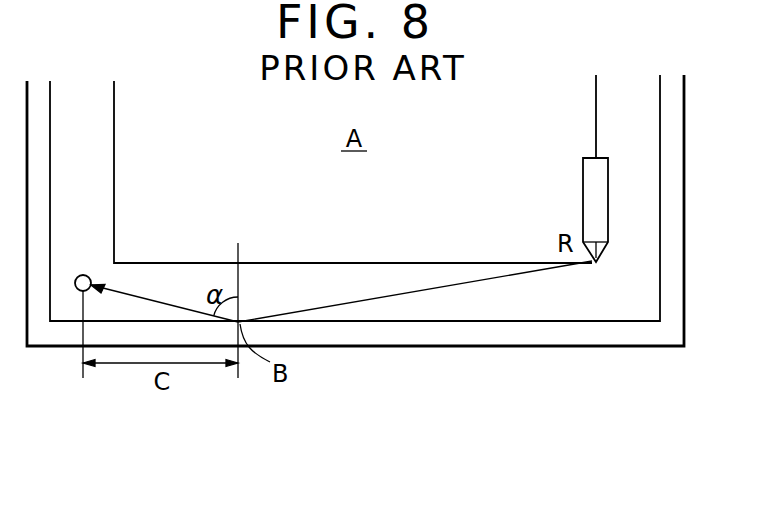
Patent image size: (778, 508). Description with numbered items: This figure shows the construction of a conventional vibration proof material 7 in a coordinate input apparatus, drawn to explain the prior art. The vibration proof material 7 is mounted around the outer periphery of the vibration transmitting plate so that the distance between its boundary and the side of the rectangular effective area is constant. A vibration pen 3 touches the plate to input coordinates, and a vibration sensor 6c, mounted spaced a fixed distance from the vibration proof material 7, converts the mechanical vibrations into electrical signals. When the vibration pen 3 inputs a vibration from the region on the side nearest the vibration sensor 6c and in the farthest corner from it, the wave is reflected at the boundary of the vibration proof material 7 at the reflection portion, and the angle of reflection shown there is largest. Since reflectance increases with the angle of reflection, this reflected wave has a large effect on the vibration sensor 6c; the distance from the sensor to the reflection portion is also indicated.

The vibration pen 3 is at (602, 176).
The vibration proof material 7 is at (680, 176).
The vibration sensor 6c is at (83, 275).